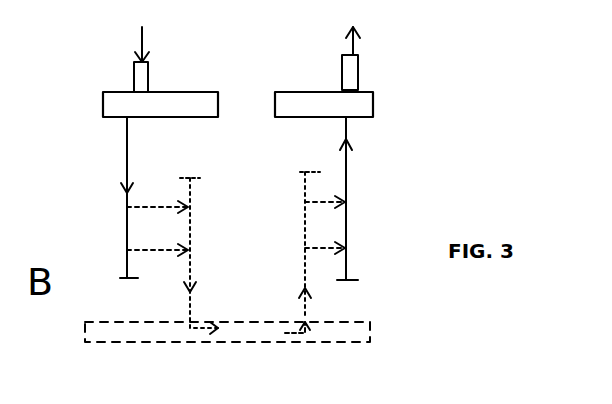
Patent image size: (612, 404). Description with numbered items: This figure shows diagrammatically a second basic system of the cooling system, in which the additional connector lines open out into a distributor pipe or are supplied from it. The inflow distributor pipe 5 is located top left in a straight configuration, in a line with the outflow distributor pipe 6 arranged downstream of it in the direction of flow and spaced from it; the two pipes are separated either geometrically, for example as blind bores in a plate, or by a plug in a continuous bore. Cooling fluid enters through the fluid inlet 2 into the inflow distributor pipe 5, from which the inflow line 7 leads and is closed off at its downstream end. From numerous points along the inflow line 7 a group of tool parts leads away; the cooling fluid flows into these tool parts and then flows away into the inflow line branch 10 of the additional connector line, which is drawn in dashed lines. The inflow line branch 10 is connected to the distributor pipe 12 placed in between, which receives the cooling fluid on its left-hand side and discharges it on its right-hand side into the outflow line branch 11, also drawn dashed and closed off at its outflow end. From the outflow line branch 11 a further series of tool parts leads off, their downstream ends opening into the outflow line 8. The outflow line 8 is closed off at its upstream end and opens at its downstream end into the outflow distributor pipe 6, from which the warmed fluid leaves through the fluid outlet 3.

The fluid inlet 2 is at (142, 32).
The fluid outlet 3 is at (358, 43).
The inflow distributor pipe 5 is at (112, 102).
The outflow distributor pipe 6 is at (358, 103).
The inflow line 7 is at (127, 152).
The outflow line 8 is at (346, 172).
The inflow line branch 10 is at (190, 232).
The outflow line branch 11 is at (305, 232).
The distributor pipe 12 is at (110, 333).